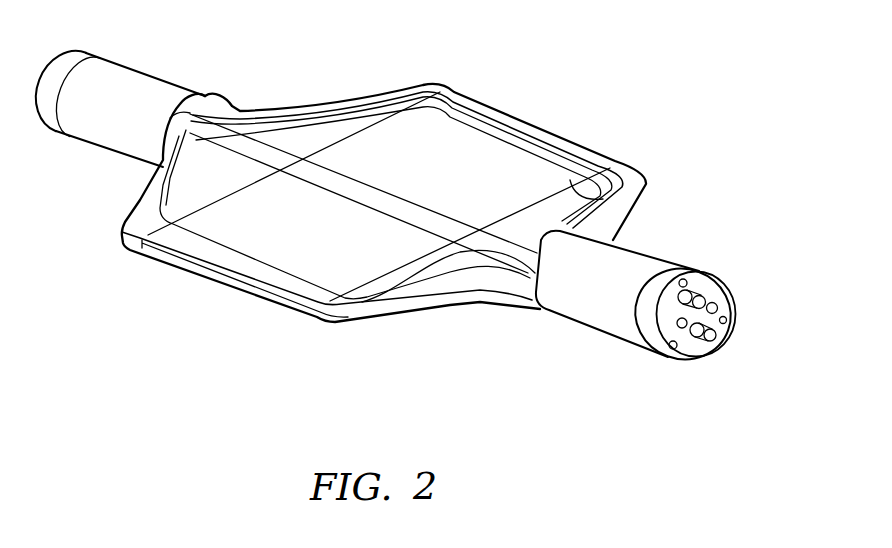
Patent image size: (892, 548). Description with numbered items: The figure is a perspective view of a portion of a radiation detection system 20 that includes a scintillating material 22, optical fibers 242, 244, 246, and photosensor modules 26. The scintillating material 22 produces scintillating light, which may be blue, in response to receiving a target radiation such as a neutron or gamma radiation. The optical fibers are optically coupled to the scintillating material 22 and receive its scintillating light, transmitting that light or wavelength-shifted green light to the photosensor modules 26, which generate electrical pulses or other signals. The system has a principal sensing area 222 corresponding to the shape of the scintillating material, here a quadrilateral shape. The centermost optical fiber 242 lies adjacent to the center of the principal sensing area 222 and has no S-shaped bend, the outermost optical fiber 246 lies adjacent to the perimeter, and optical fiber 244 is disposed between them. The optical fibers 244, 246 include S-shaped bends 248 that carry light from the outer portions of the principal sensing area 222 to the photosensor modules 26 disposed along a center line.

The radiation detection system 20 is at (664, 50).
The scintillating material 22 is at (376, 151).
The photosensor modules 26 is at (110, 72).
The principal sensing area 222 is at (648, 184).
The centermost optical fiber 242 is at (352, 200).
The optical fiber 244 is at (514, 129).
The outermost optical fiber 246 is at (477, 101).
The S-shaped bends 248 is at (434, 266).